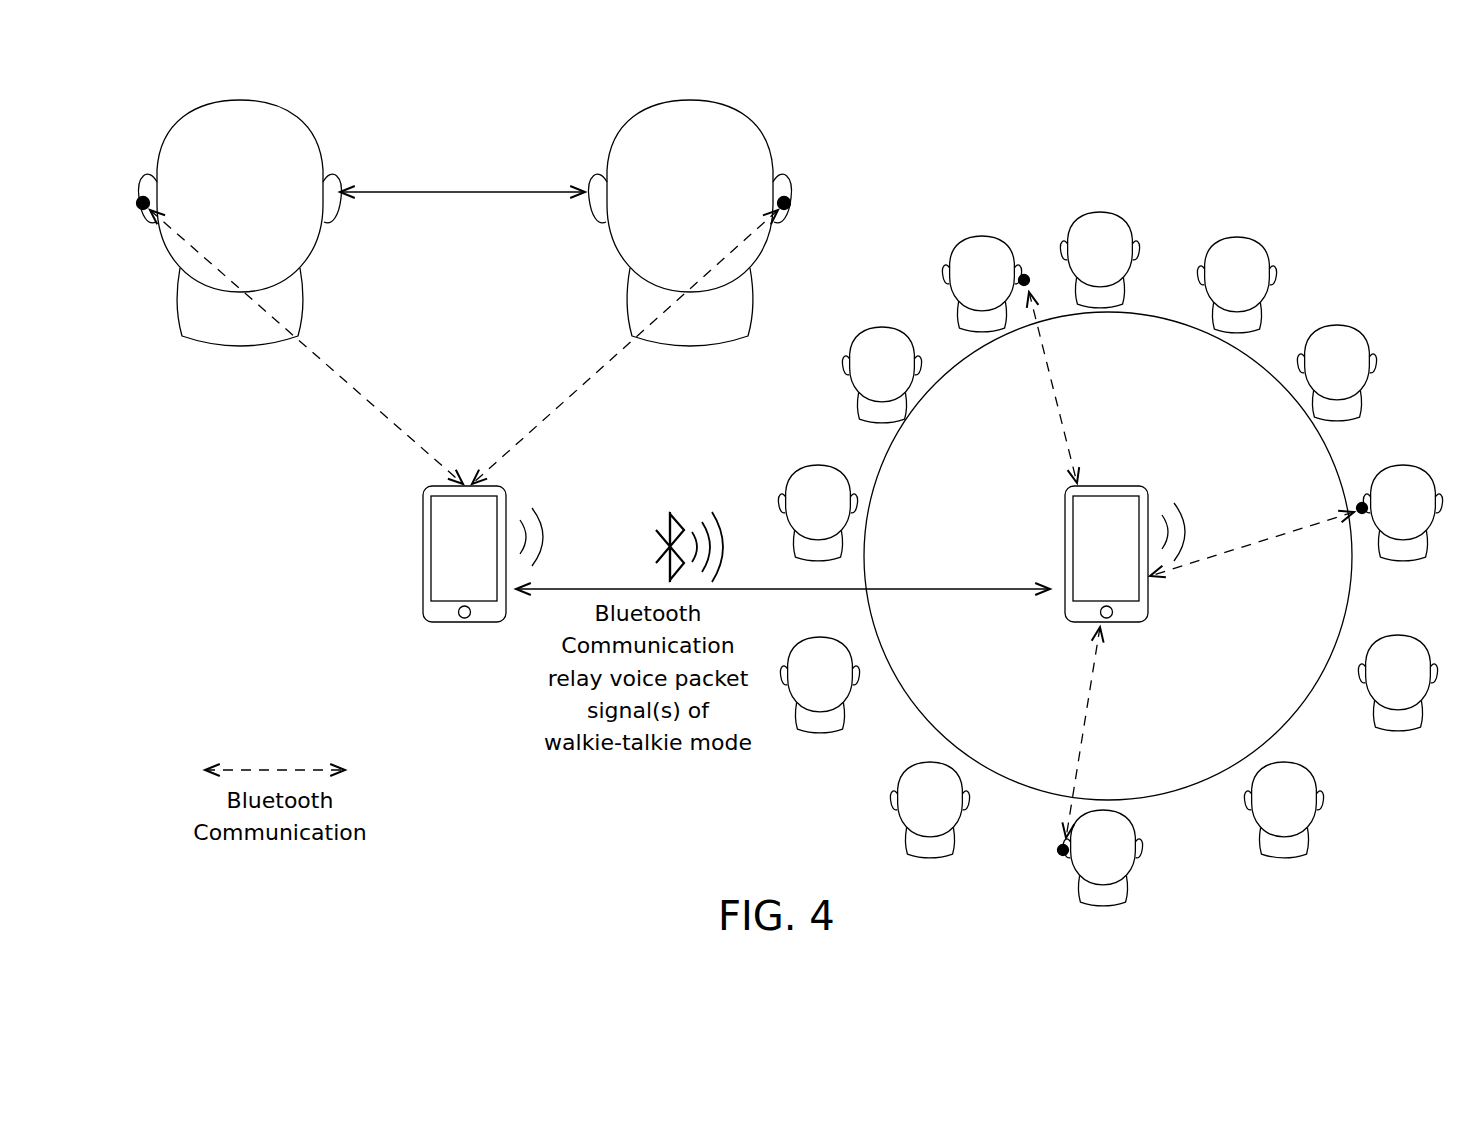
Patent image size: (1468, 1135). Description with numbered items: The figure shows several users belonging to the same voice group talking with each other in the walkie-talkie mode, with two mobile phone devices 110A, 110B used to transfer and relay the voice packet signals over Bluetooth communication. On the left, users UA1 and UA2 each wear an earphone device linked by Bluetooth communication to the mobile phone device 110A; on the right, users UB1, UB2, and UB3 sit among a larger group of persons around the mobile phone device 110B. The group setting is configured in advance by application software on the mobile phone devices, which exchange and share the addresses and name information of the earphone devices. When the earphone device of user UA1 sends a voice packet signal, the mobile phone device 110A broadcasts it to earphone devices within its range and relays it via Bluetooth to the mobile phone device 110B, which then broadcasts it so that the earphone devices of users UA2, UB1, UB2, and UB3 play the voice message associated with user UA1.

The mobile phone device 110A is at (464, 625).
The mobile phone device 110B is at (1103, 485).
The user UA1 is at (240, 209).
The user UA2 is at (690, 209).
The user UB1 is at (981, 272).
The user UB2 is at (1102, 874).
The user UB3 is at (1402, 501).